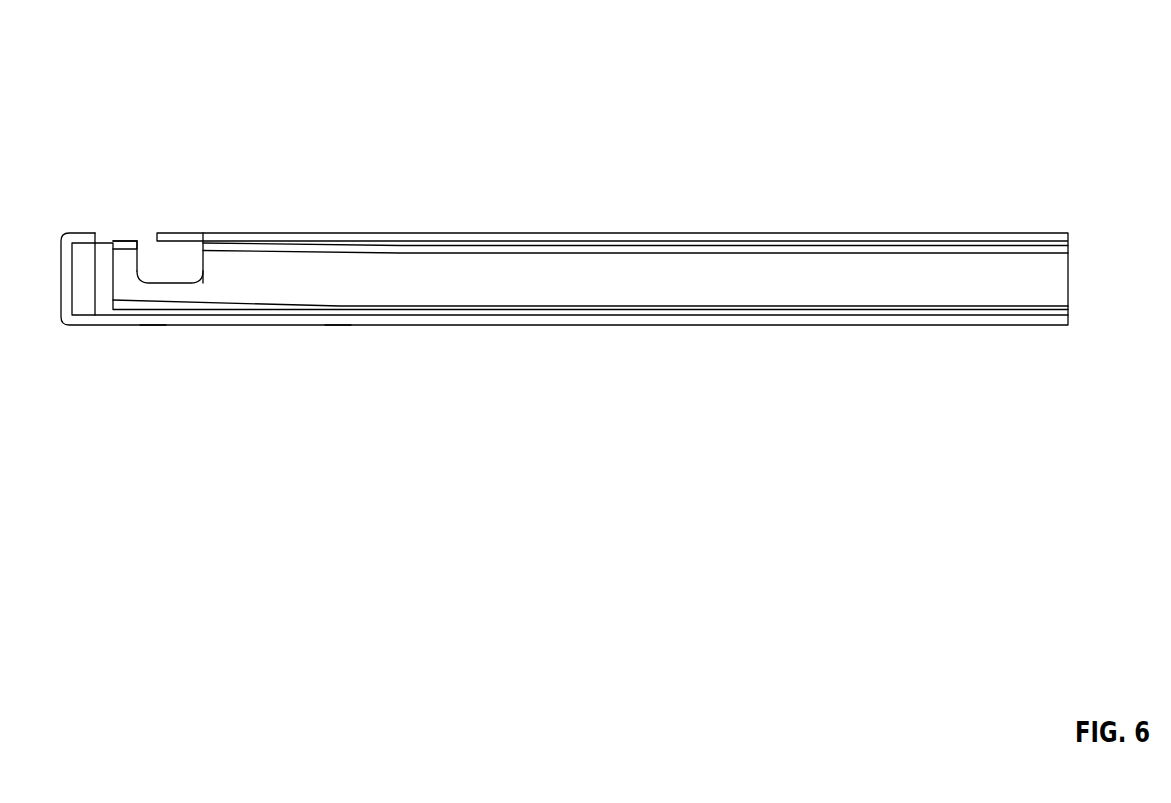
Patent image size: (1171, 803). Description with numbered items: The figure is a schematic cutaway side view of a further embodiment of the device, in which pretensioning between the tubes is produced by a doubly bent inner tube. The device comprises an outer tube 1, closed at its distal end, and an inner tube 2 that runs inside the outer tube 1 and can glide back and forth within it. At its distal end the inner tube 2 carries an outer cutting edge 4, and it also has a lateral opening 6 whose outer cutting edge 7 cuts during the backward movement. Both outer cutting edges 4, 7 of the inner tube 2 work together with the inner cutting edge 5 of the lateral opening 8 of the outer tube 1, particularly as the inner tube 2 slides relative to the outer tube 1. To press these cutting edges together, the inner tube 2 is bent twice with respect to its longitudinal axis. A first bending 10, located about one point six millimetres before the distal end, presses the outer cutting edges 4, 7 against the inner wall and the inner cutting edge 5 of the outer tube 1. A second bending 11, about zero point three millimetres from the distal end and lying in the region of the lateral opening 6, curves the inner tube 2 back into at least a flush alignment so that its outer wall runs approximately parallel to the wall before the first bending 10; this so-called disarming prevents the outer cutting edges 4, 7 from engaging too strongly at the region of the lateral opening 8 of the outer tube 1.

The outer tube 1 is at (487, 233).
The inner tube 2 is at (553, 307).
The outer cutting edge 4 is at (112, 246).
The inner cutting edge 5 is at (101, 246).
The lateral opening 6 is at (184, 264).
The outer cutting edge 7 is at (137, 246).
The lateral opening 8 is at (121, 213).
The first bending 10 is at (338, 348).
The second bending 11 is at (153, 348).